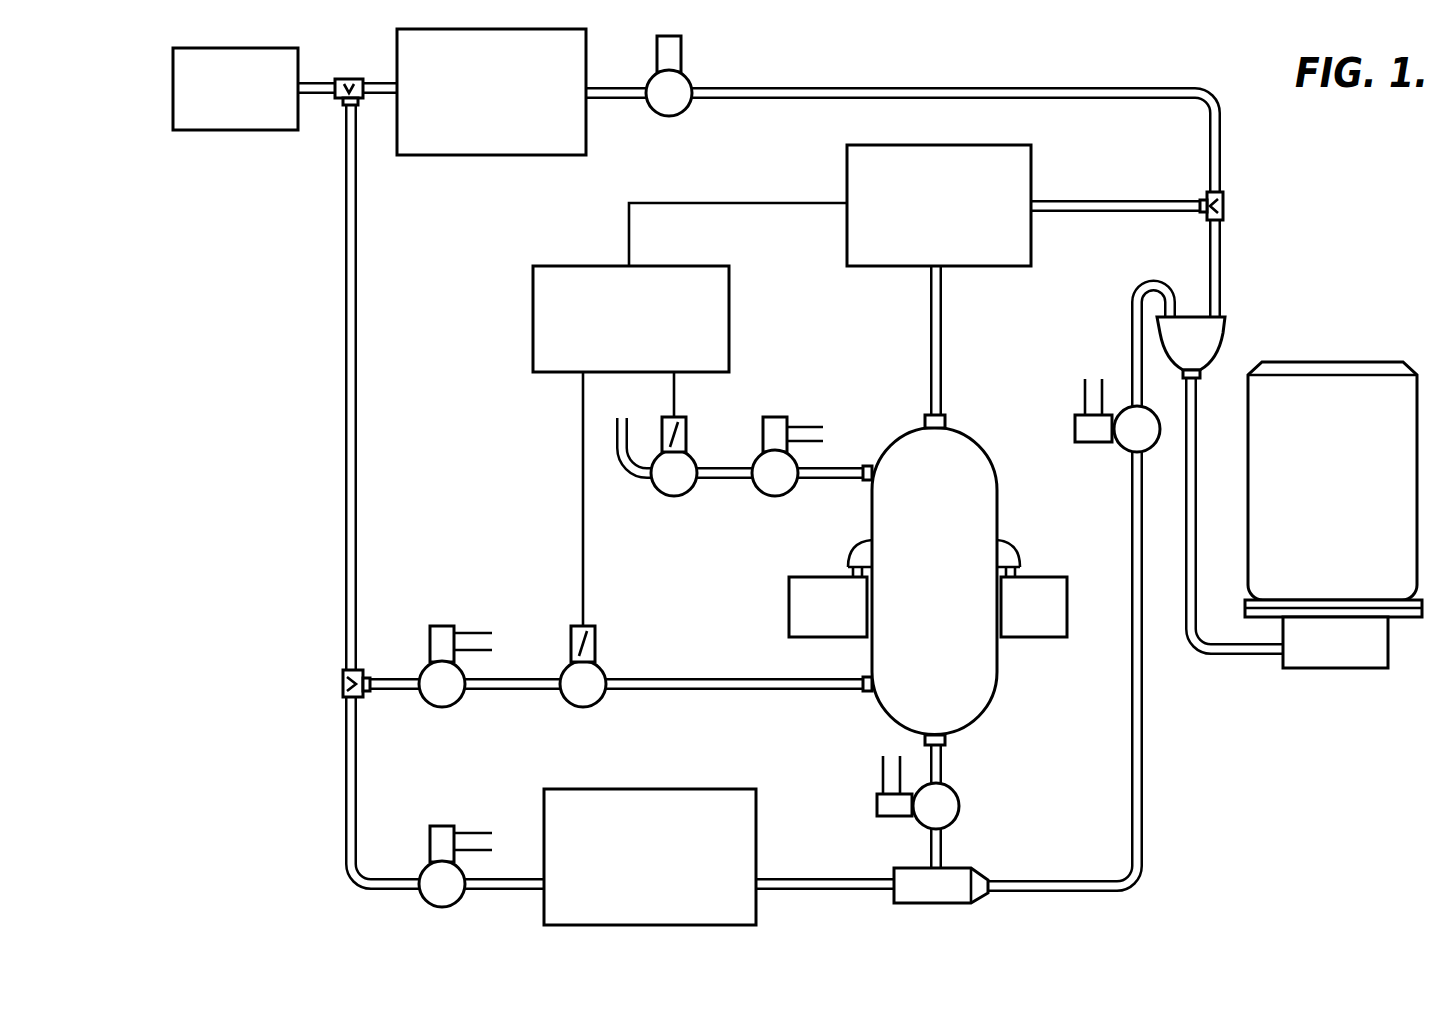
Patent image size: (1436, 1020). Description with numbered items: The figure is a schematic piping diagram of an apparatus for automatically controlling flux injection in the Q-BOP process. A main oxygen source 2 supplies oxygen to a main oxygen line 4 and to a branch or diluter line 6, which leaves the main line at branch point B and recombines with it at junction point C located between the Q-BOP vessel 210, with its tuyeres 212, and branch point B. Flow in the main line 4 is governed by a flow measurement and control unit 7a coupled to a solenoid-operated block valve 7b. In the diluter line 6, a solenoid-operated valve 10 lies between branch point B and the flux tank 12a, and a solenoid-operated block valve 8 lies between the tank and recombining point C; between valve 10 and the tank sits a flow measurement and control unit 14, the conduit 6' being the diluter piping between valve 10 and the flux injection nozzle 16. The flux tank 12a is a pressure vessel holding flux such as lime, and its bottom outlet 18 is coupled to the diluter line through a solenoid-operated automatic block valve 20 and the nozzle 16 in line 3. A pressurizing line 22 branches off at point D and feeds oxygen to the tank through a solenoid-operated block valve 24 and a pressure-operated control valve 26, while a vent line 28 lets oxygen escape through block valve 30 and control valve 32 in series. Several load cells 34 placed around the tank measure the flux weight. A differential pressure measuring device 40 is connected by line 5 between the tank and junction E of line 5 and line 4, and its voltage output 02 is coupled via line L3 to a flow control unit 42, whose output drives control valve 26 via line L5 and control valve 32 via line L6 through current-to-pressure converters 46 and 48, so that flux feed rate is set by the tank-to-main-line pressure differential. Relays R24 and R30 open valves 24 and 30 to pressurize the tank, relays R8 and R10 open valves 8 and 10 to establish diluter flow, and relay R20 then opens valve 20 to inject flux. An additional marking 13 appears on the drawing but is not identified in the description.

The main oxygen source 2 is at (235, 89).
The flow measurement and control unit 7a is at (491, 92).
The solenoid-operated block valve 7b is at (688, 110).
The main oxygen line 4 is at (790, 88).
The line 5 is at (1110, 200).
The diluter line 6 is at (738, 492).
The conduit 6' is at (825, 861).
The differential pressure measuring device 40 is at (939, 205).
The flow control unit 42 is at (631, 319).
The line L3 is at (746, 184).
The line L5 is at (580, 537).
The line L6 is at (677, 393).
The voltage output 02 is at (845, 203).
The current-to-pressure converter 48 is at (688, 430).
The vent line 28 is at (612, 470).
The control valve 32 is at (672, 497).
The block valve 30 is at (775, 497).
The relay R30 is at (822, 419).
The load cells 34 is at (800, 577).
The flux tank 12a is at (955, 615).
The outlet 18 is at (947, 741).
The current-to-pressure converter 46 is at (597, 641).
The solenoid-operated block valve 24 is at (441, 707).
The relay R24 is at (486, 629).
The pressure-operated control valve 26 is at (575, 707).
The pressurizing line 22 is at (745, 695).
The branch point B is at (355, 79).
The branch point D is at (341, 685).
The junction E is at (1207, 204).
The junction point C is at (1196, 312).
The solenoid-operated block valve 8 is at (1122, 448).
The relay R8 is at (1073, 394).
The Q-BOP vessel 210 is at (1332, 481).
The tuyeres 212 is at (1333, 634).
The solenoid-operated automatic block valve 20 is at (958, 795).
The relay R20 is at (865, 771).
The line 3 is at (945, 842).
The flux injection nozzle 16 is at (962, 866).
The flux feeding line 13 is at (968, 906).
The flow measurement and control unit 14 is at (650, 857).
The solenoid-operated valve 10 is at (420, 897).
The relay R10 is at (487, 828).